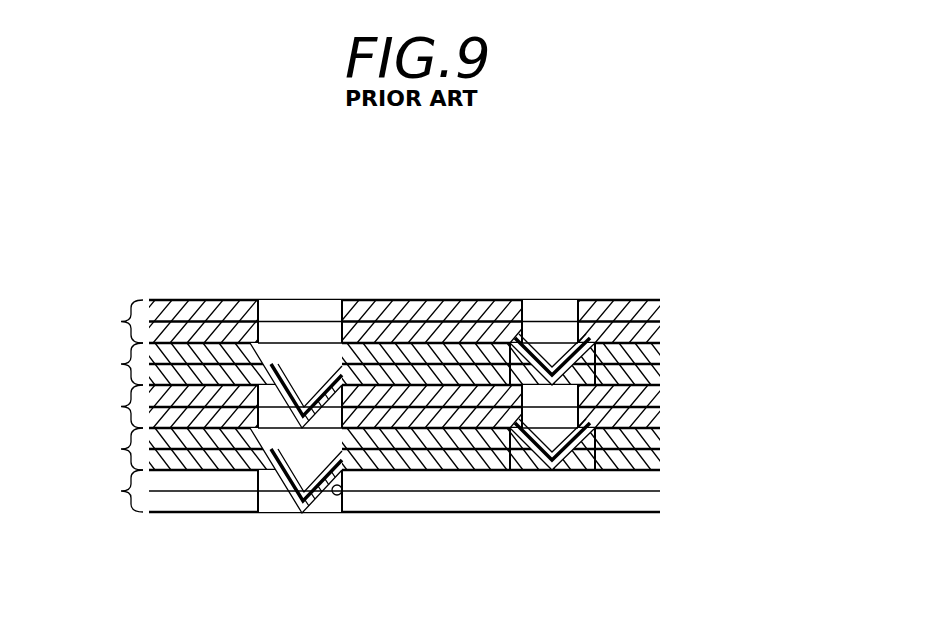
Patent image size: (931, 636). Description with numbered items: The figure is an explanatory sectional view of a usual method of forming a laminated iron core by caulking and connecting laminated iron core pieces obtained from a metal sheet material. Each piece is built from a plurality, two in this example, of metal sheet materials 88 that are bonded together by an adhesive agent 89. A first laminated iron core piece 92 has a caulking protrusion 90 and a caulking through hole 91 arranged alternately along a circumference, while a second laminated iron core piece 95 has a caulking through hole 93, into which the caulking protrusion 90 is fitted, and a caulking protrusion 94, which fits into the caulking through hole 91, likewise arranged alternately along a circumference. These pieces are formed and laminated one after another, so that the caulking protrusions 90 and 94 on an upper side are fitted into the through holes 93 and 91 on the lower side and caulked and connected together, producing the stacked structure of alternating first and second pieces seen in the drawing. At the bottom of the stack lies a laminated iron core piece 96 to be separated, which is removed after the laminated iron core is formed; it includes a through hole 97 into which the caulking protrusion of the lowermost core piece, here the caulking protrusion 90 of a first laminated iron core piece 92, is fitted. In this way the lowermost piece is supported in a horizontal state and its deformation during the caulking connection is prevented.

The metal sheet material 88 is at (662, 301).
The adhesive agent 89 is at (660, 316).
The caulking protrusion 90 is at (333, 352).
The caulking through hole 91 is at (527, 355).
The first laminated iron core piece 92 is at (109, 406).
The caulking through hole 93 is at (262, 337).
The caulking protrusion 94 is at (580, 322).
The second laminated iron core piece 95 is at (109, 364).
The laminated iron core piece to be separated 96 is at (109, 491).
The through hole 97 is at (345, 490).